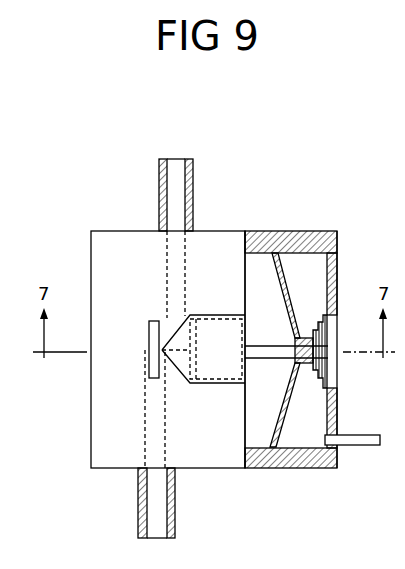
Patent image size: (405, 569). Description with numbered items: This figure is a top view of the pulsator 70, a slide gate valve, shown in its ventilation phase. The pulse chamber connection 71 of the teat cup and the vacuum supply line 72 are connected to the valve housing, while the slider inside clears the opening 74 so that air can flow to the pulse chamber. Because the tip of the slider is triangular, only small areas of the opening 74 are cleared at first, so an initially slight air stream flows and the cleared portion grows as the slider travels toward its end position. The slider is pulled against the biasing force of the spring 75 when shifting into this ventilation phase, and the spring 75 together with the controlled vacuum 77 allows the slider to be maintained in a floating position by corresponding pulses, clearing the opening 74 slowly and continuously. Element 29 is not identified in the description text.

The pulsator 70 is at (262, 166).
The pulse chamber connection 71 is at (155, 490).
The vacuum supply line 72 is at (175, 193).
The opening 74 is at (148, 345).
The spring 75 is at (322, 330).
The strut 29 is at (290, 400).
The controlled vacuum 77 is at (368, 447).